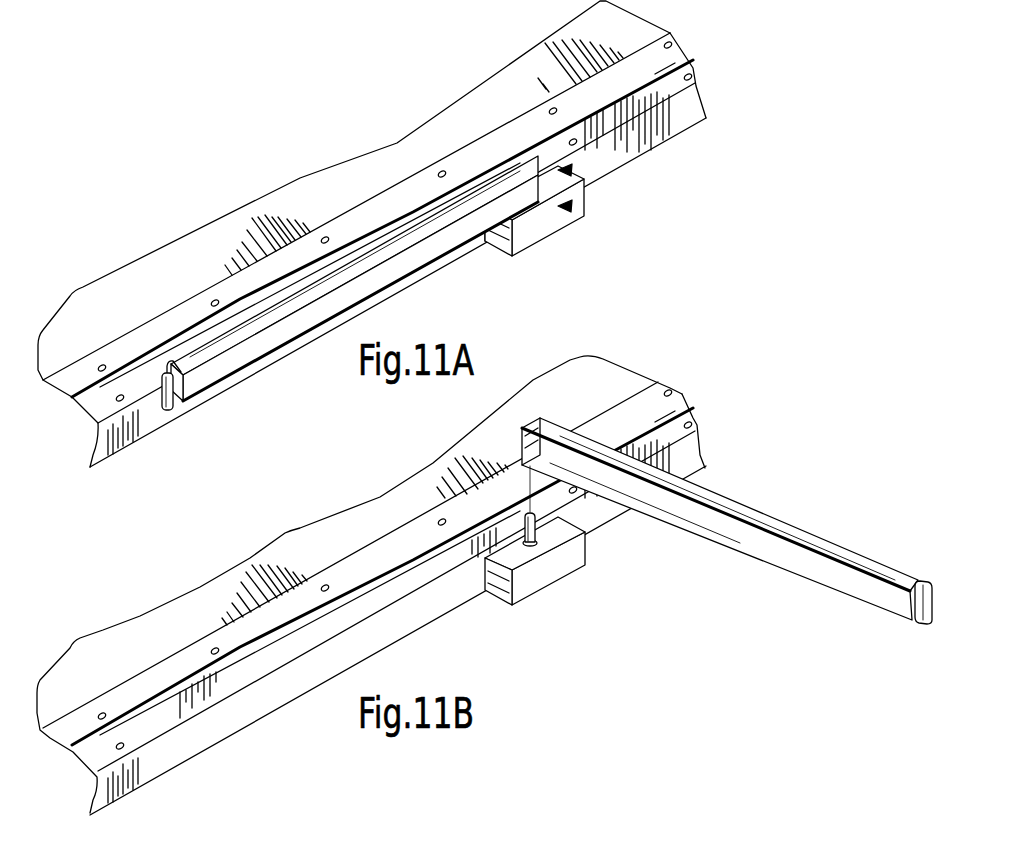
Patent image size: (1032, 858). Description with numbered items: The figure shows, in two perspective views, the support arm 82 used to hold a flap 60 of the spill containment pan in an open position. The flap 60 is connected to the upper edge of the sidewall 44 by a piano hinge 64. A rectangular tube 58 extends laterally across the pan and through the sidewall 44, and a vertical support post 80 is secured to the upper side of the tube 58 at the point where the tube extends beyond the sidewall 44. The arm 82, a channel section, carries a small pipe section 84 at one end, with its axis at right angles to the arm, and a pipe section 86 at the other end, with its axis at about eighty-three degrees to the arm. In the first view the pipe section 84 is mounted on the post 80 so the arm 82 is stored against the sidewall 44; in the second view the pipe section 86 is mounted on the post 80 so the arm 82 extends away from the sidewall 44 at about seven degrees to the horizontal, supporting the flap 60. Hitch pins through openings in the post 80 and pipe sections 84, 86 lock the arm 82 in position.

In FIG. 11A, the flap 60 is at (523, 78).
In FIG. 11B, the flap 60 is at (595, 383).
In FIG. 11A, the piano hinge 64 is at (670, 85).
In FIG. 11B, the piano hinge 64 is at (677, 434).
In FIG. 11A, the sidewall 44 is at (638, 134).
In FIG. 11B, the sidewall 44 is at (418, 612).
In FIG. 11A, the rectangular tube 58 is at (546, 220).
In FIG. 11B, the rectangular tube 58 is at (550, 588).
In FIG. 11A, the support arm 82 is at (252, 350).
In FIG. 11B, the support arm 82 is at (745, 512).
In FIG. 11A, the pipe section 86 is at (184, 394).
In FIG. 11B, the pipe section 86 is at (525, 425).
In FIG. 11A, the pipe section 84 is at (562, 152).
In FIG. 11B, the pipe section 84 is at (910, 618).
In FIG. 11B, the vertical support post 80 is at (583, 540).